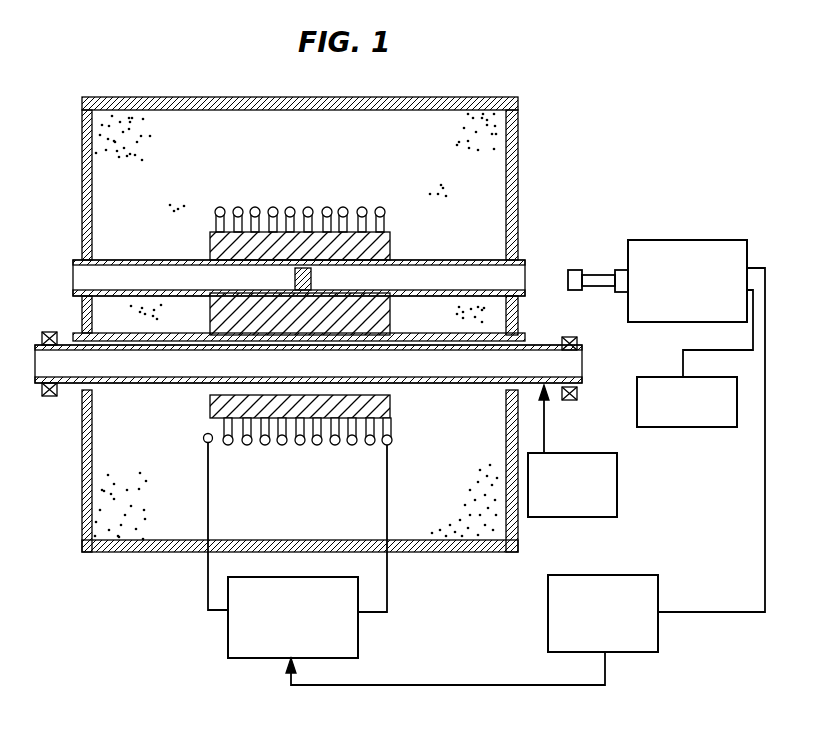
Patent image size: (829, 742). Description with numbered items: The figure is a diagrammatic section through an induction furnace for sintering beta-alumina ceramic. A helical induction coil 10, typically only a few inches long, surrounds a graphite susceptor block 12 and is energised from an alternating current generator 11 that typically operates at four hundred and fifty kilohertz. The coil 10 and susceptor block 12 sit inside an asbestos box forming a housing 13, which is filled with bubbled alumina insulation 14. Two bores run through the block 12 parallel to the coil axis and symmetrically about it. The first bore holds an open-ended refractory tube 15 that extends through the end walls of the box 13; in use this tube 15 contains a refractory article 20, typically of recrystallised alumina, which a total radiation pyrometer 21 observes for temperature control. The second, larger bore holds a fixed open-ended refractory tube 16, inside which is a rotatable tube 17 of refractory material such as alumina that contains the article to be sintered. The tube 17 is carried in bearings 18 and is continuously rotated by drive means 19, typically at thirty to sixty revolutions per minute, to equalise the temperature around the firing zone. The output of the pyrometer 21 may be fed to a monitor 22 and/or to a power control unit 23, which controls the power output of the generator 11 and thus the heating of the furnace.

The induction coil 10 is at (380, 207).
The alternating current generator 11 is at (352, 645).
The graphite susceptor block 12 is at (388, 256).
The housing 13 is at (519, 170).
The bubbled alumina insulation 14 is at (478, 522).
The refractory tube 15 is at (525, 272).
The fixed open-ended refractory tube 16 is at (525, 340).
The rotatable tube 17 is at (540, 345).
The bearings 18 is at (44, 330).
The drive means 19 is at (615, 482).
The refractory article 20 is at (303, 270).
The total radiation pyrometer 21 is at (678, 250).
The monitor 22 is at (708, 417).
The power control unit 23 is at (650, 585).